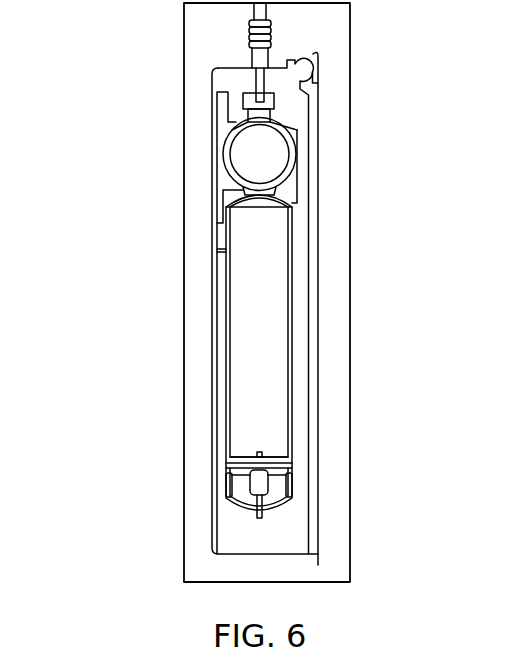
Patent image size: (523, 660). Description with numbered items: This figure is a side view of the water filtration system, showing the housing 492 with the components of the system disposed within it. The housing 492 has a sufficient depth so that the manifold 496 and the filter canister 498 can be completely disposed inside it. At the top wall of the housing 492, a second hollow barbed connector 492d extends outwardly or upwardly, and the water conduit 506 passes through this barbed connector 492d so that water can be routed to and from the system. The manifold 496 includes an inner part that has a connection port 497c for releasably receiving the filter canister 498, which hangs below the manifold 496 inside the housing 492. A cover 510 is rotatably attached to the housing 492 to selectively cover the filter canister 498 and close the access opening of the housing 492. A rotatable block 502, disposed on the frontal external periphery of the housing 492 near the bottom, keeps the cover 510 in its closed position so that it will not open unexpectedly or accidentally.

The housing 492 is at (142, 462).
The water conduit 506 is at (259, 13).
The second hollow barbed connector 492d is at (249, 38).
The connection port 497c is at (243, 97).
The manifold 496 is at (220, 151).
The filter canister 498 is at (247, 335).
The cover 510 is at (220, 541).
The rotatable block 502 is at (318, 493).